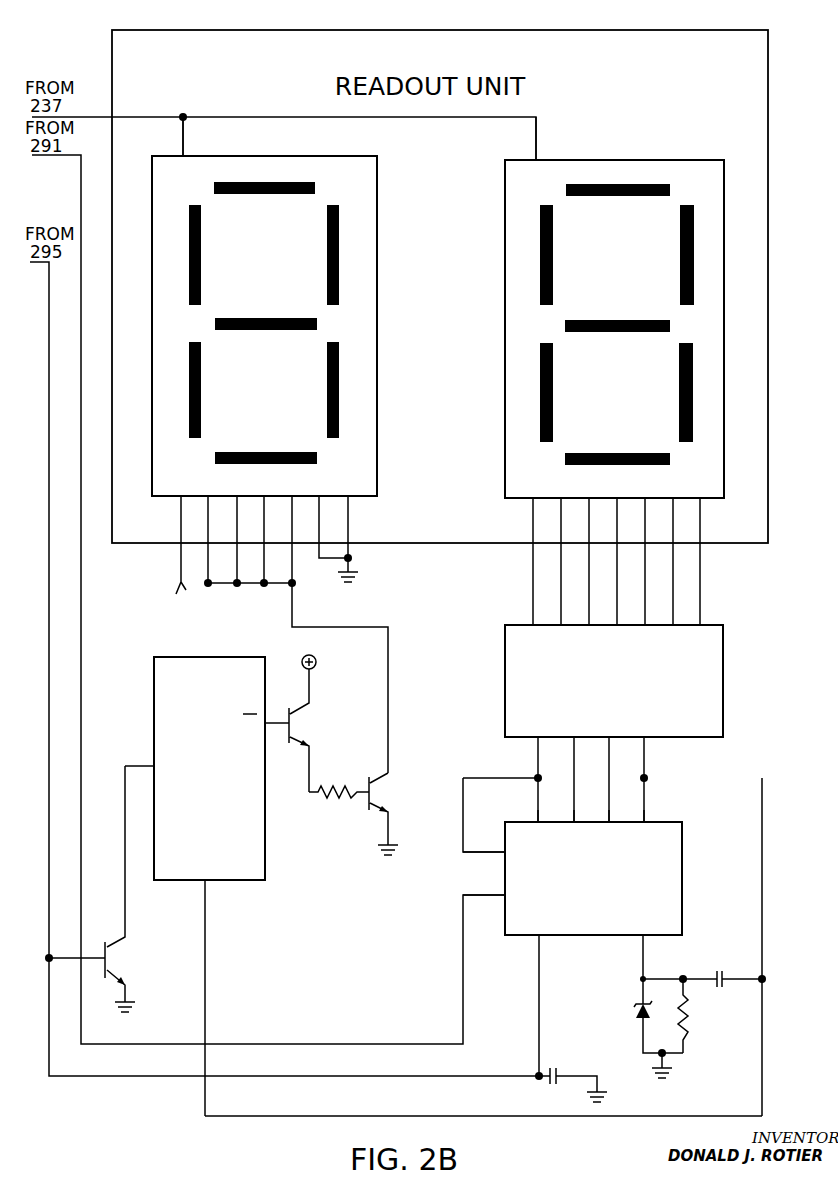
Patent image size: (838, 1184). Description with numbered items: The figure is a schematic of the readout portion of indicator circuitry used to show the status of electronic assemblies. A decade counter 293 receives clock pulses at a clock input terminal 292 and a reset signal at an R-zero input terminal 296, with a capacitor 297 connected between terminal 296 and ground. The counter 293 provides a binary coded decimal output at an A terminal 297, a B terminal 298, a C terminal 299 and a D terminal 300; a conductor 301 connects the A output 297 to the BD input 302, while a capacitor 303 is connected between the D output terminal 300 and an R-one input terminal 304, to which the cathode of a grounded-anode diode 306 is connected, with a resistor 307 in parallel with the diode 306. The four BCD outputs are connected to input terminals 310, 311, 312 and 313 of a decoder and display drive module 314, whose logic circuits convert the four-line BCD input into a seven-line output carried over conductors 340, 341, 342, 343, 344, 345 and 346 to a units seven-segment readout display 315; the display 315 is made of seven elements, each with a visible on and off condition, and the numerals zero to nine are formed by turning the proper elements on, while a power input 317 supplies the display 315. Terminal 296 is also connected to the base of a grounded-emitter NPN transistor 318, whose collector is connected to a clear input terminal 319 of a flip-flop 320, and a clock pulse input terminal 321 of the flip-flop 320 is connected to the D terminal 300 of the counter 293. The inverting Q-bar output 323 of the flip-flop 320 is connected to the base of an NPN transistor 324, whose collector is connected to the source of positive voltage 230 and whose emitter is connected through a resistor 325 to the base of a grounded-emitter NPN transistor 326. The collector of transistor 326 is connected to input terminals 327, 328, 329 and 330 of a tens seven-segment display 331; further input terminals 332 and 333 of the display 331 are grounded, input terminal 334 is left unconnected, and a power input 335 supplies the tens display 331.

The source of positive voltage 230 is at (321, 643).
The clock input terminal 292 is at (502, 898).
The decade counter 293 is at (684, 830).
The R0 input terminal 296 is at (538, 938).
The capacitor / A output terminal 297 is at (538, 820).
The B terminal 298 is at (573, 820).
The C terminal 299 is at (607, 820).
The D terminal 300 is at (644, 820).
The conductor 301 is at (497, 778).
The BD input 302 is at (503, 857).
The capacitor 303 is at (720, 975).
The R1 input terminal 304 is at (642, 938).
The diode 306 is at (632, 1012).
The resistor 307 is at (690, 1005).
The input terminal 310 is at (535, 745).
The input terminal 311 is at (574, 742).
The input terminal 312 is at (609, 742).
The input terminal 313 is at (644, 742).
The decoder and display drive module 314 is at (727, 683).
The units seven-segment readout display 315 is at (680, 160).
The power input 317 is at (535, 159).
The NPN transistor 318 is at (137, 968).
The clear input terminal 319 is at (153, 766).
The flip-flop 320 is at (230, 657).
The clock pulse input terminal 321 is at (207, 882).
The Q-bar inverting output 323 is at (270, 722).
The NPN transistor 324 is at (327, 731).
The resistor 325 is at (342, 797).
The NPN transistor 326 is at (405, 802).
The input terminal 327 is at (208, 587).
The input terminal 328 is at (237, 587).
The input terminal 329 is at (264, 587).
The input terminal 330 is at (292, 586).
The tens seven-segment display 331 is at (348, 156).
The input terminal 332 is at (320, 533).
The input terminal 333 is at (352, 556).
The input terminal 334 is at (181, 568).
The power input 335 is at (183, 155).
The conductor 340 is at (533, 622).
The conductor 341 is at (561, 622).
The conductor 342 is at (589, 622).
The conductor 343 is at (617, 622).
The conductor 344 is at (645, 622).
The conductor 345 is at (673, 622).
The conductor 346 is at (700, 622).